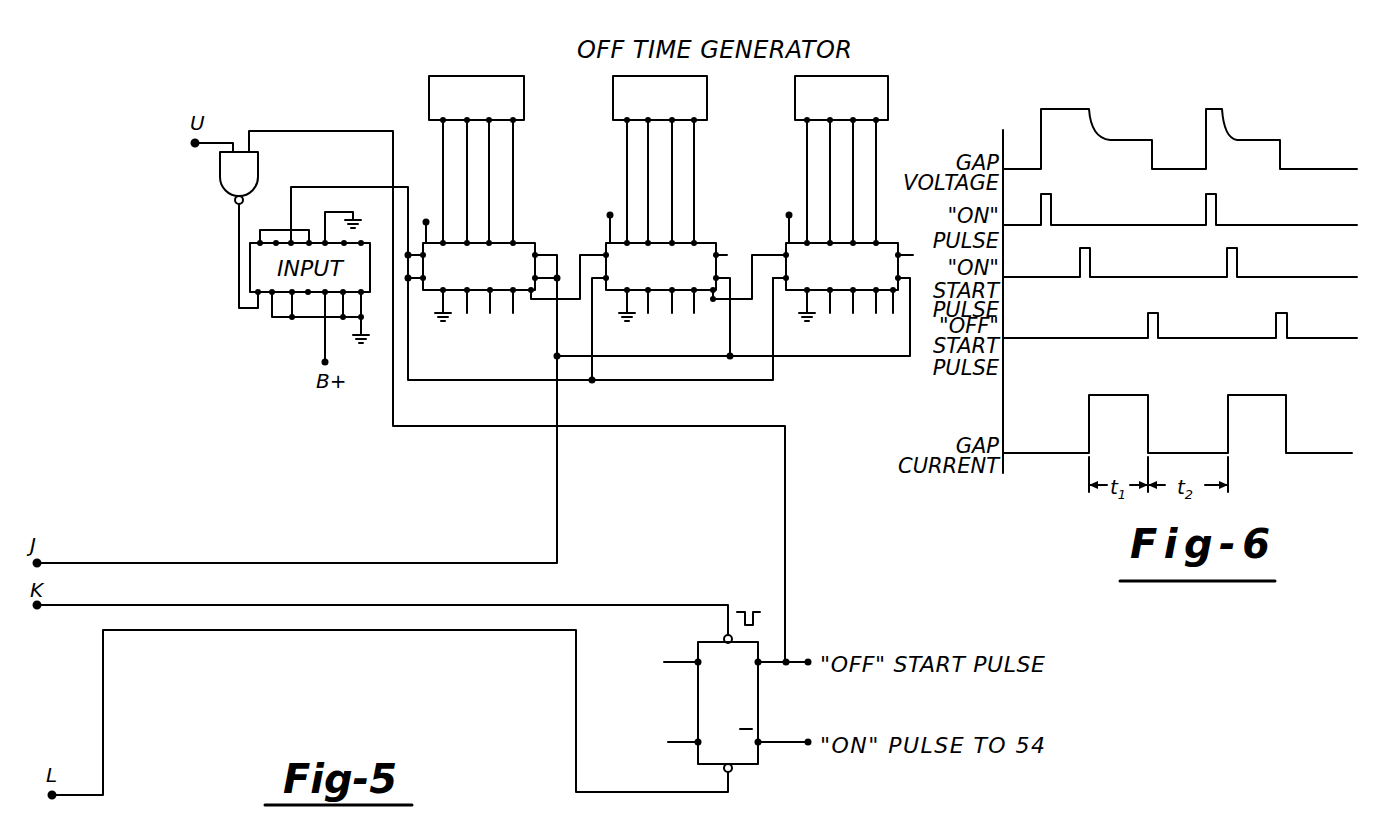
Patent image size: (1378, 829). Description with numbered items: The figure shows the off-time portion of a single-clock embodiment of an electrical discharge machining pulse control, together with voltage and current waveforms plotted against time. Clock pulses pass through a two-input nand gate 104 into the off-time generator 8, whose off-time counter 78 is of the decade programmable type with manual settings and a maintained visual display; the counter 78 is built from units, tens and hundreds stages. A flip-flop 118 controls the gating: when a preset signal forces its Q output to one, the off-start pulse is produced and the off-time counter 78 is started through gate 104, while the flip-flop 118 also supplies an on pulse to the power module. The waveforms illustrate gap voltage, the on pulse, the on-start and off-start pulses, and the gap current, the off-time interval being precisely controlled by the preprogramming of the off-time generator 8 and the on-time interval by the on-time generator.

The off-time generator 8 is at (822, 410).
The off-time counter 78 is at (475, 319).
The nand gate 104 is at (232, 182).
The flip-flop 118 is at (758, 704).